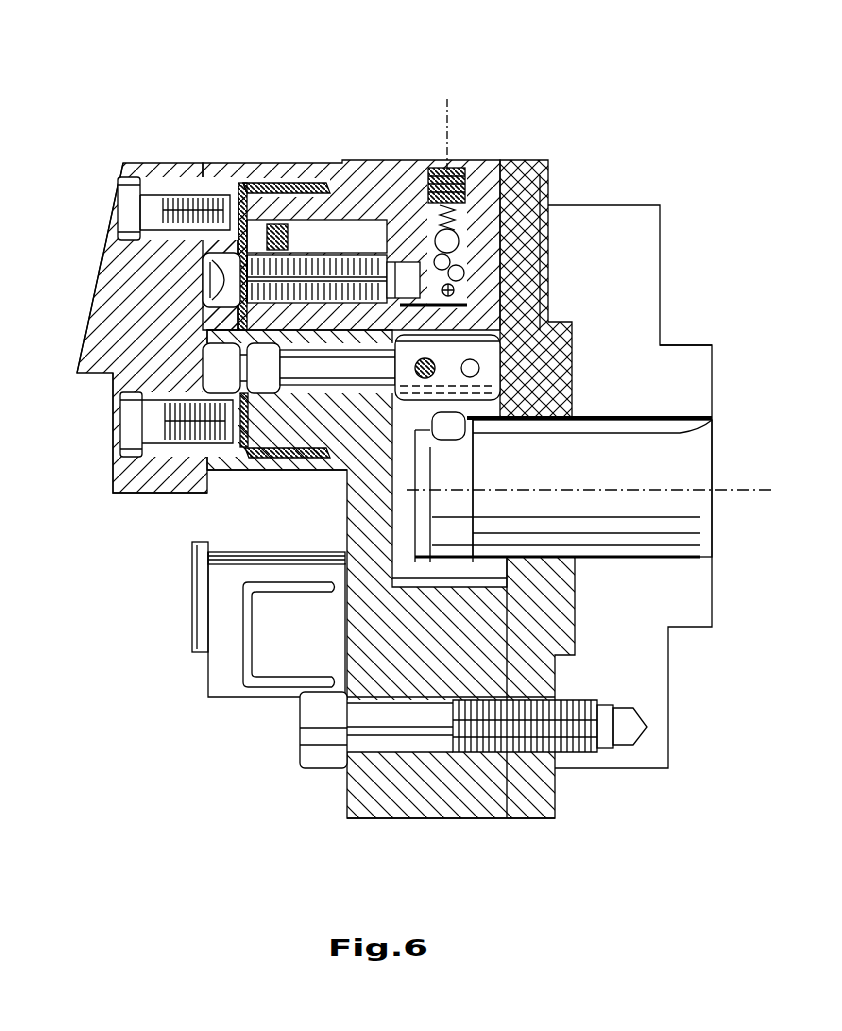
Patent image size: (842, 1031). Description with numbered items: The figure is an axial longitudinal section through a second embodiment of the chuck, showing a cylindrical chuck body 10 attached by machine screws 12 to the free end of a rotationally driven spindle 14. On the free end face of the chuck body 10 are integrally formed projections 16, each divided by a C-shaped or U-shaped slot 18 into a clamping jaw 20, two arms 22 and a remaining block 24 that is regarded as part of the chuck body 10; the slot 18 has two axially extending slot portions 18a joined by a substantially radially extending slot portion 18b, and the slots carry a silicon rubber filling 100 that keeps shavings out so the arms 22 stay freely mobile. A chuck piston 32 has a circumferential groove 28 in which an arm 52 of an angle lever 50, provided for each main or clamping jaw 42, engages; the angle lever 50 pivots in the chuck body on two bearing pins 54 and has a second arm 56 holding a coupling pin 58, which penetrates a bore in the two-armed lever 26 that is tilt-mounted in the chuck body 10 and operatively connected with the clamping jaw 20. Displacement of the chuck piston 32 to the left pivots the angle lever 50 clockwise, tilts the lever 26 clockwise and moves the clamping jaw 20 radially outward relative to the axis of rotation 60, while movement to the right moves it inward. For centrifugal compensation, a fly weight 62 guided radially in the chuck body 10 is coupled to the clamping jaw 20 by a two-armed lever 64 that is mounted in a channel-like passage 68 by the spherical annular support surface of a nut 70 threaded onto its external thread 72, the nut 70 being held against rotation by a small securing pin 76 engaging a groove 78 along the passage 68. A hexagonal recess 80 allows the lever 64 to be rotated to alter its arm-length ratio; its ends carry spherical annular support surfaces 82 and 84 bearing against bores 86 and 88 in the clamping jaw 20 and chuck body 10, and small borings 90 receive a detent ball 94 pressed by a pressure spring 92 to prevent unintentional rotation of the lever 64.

The chuck body 10 is at (418, 822).
The machine screws 12 is at (312, 708).
The spindle 14 is at (639, 772).
The projections 16 is at (234, 704).
The slot 18 is at (293, 432).
The axially extending slot portions 18a is at (305, 182).
The radially extending slot portion 18b is at (105, 335).
The clamping jaw 20 is at (205, 330).
The arms 22 is at (258, 205).
The block 24 is at (192, 549).
The two-armed lever 26 is at (288, 455).
The circumferential groove 28 is at (470, 558).
The chuck piston 32 is at (605, 470).
The main or clamping jaw 42 is at (125, 470).
The angle lever 50 is at (545, 340).
The arm of angle lever 52 is at (714, 416).
The bearing pins 54 is at (478, 362).
The second arm of angle lever 56 is at (540, 384).
The coupling pin 58 is at (507, 365).
The axis of rotation 60 is at (630, 490).
The fly weight 62 is at (405, 185).
The two-armed lever 64 is at (398, 235).
The channel-like passage 68 is at (205, 455).
The nut 70 is at (212, 343).
The external thread 72 is at (337, 222).
The securing pin 76 is at (255, 172).
The groove 78 is at (298, 250).
The hexagonal recess 80 is at (205, 280).
The spherical annular support surface 82 is at (205, 282).
The spherical annular support surface 84 is at (468, 275).
The bore in clamping jaw 86 is at (135, 247).
The bore in chuck body 88 is at (470, 290).
The small borings 90 is at (460, 240).
The pressure spring 92 is at (540, 175).
The detent ball 94 is at (465, 212).
The silicon rubber filling 100 is at (245, 178).